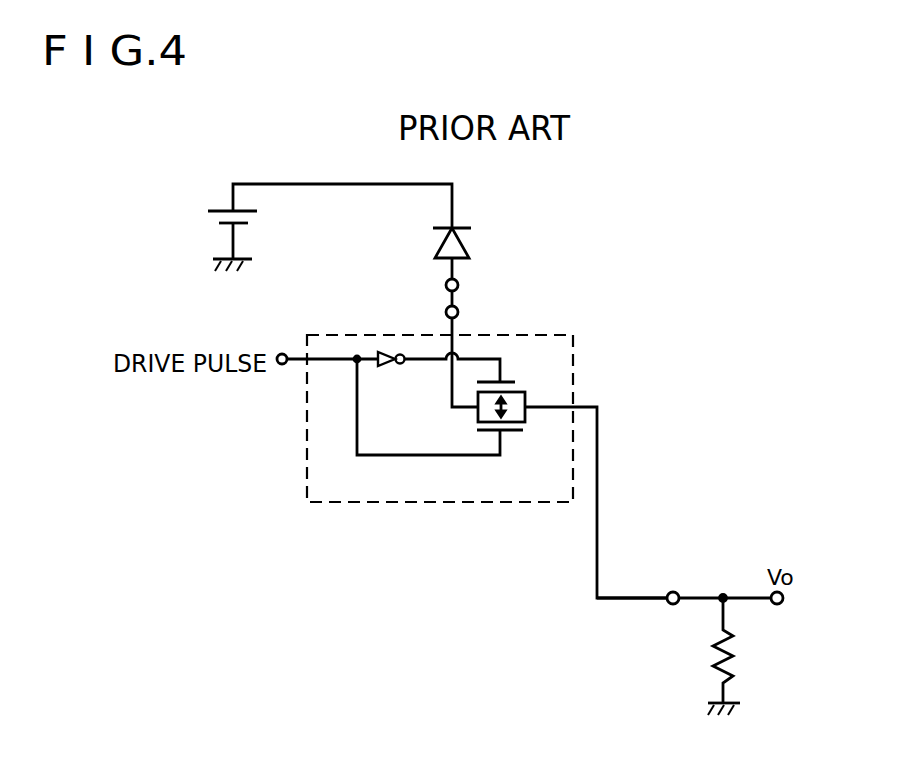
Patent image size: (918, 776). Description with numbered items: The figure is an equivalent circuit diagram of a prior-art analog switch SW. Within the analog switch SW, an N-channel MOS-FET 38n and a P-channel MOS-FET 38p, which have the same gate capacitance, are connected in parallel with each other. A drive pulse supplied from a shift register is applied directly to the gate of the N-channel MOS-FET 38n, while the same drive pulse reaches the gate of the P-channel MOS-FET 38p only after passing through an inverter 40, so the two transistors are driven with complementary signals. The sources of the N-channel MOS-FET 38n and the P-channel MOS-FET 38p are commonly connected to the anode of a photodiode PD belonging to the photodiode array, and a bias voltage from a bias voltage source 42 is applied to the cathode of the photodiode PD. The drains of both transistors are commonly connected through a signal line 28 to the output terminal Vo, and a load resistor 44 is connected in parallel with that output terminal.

The bias voltage source 42 is at (243, 228).
The photodiode PD is at (456, 246).
The analog switch SW is at (500, 333).
The P-channel MOS-FET 38p is at (538, 368).
The N-channel MOS-FET 38n is at (516, 432).
The inverter 40 is at (387, 366).
The signal line 28 is at (627, 598).
The load resistor 44 is at (733, 662).